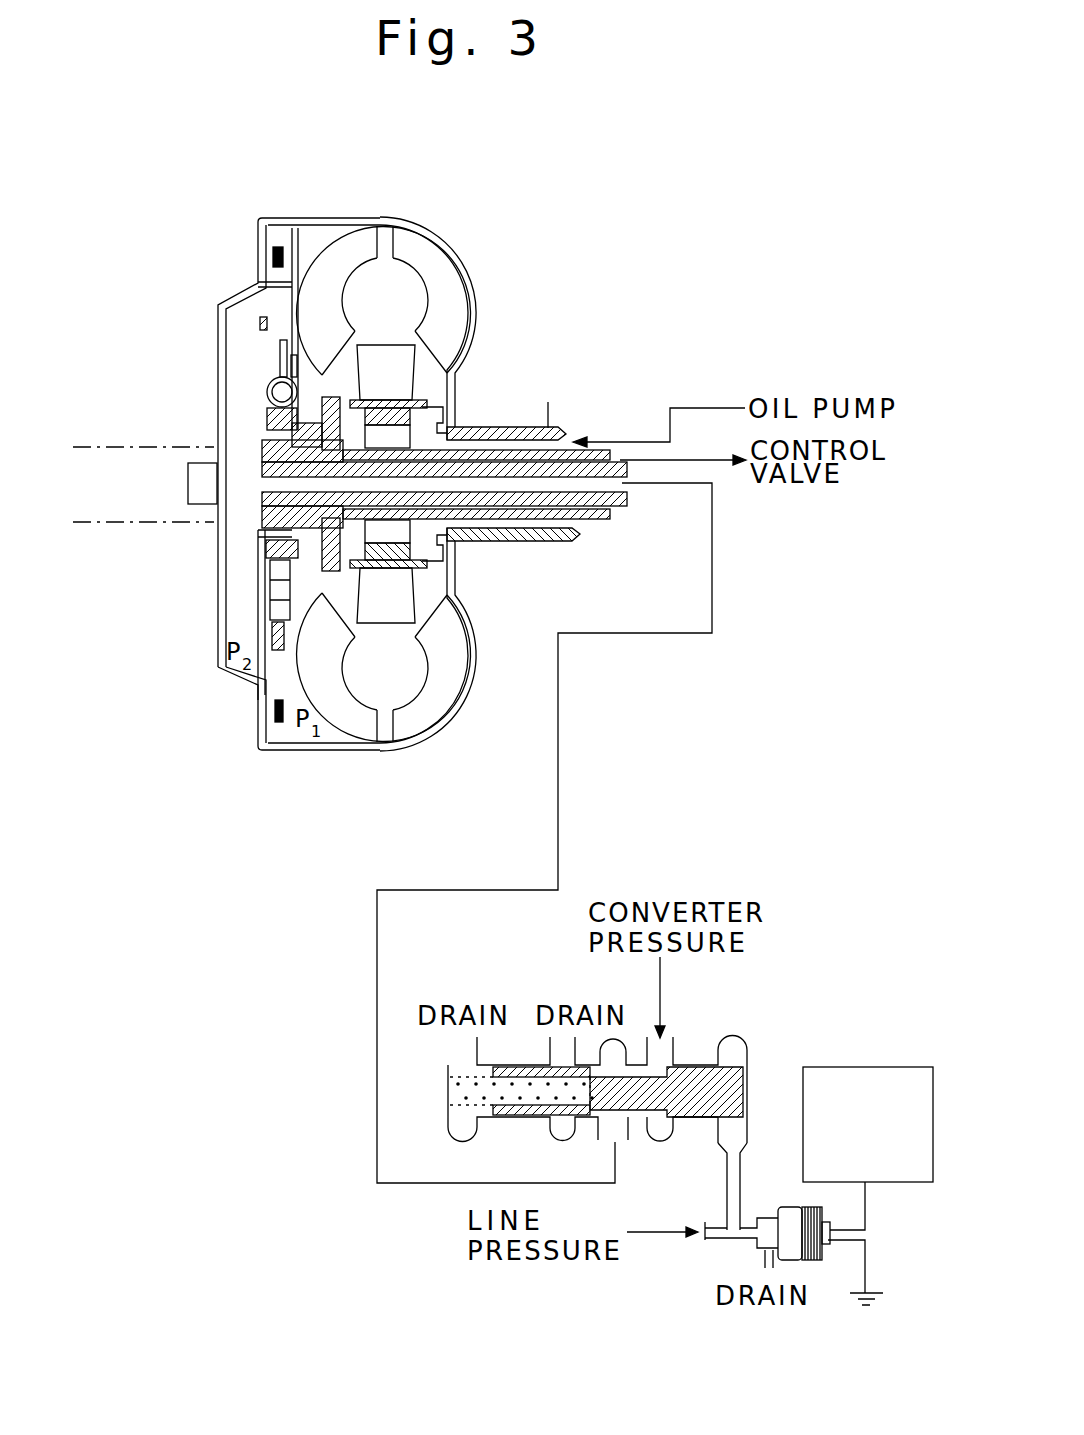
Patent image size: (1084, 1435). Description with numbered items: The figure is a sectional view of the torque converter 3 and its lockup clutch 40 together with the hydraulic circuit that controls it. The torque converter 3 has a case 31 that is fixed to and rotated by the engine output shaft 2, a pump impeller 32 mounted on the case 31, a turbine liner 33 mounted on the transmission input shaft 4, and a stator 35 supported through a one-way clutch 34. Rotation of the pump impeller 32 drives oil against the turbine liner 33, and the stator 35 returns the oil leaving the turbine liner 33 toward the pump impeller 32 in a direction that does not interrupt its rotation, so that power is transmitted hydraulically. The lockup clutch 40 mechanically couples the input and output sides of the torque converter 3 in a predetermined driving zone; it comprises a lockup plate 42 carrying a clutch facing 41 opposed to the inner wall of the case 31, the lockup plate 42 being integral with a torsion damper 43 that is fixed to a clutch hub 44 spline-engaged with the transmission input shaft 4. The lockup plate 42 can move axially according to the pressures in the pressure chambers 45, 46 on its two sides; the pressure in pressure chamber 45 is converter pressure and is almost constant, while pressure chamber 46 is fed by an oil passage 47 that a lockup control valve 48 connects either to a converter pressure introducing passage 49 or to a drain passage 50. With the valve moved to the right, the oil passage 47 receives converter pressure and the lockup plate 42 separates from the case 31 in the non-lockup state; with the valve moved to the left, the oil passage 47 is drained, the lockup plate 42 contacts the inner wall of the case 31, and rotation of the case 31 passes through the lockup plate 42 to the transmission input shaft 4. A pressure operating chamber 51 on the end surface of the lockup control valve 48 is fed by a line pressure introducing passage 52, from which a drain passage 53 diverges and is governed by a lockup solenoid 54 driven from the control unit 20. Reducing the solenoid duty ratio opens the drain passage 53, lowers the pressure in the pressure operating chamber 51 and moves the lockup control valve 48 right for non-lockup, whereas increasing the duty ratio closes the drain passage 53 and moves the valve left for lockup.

The engine output shaft 2 is at (132, 447).
The torque converter 3 is at (419, 229).
The transmission input shaft 4 is at (550, 401).
The control unit 20 is at (878, 1067).
The case 31 is at (217, 302).
The pump impeller 32 is at (470, 282).
The turbine liner 33 is at (347, 247).
The one-way clutch 34 is at (420, 410).
The stator 35 is at (400, 360).
The lockup clutch 40 is at (273, 237).
The clutch facing 41 is at (263, 258).
The lockup plate 42 is at (288, 245).
The torsion damper 43 is at (270, 393).
The clutch hub 44 is at (260, 447).
The pressure chamber 45 is at (337, 735).
The pressure chamber 46 is at (240, 603).
The oil passage 47 is at (575, 519).
The lockup control valve 48 is at (702, 1068).
The converter pressure introducing passage 49 is at (657, 1035).
The drain passage 50 is at (552, 1045).
The pressure operating chamber 51 is at (741, 1127).
The line pressure introducing passage 52 is at (718, 1230).
The drain passage 53 is at (763, 1258).
The lockup solenoid 54 is at (808, 1262).